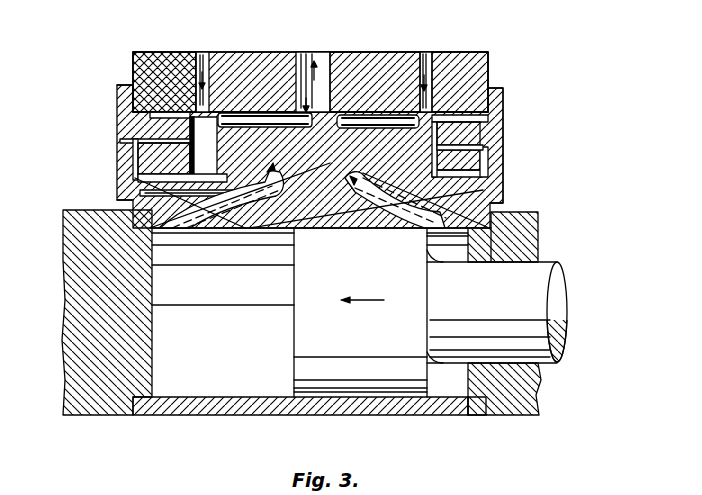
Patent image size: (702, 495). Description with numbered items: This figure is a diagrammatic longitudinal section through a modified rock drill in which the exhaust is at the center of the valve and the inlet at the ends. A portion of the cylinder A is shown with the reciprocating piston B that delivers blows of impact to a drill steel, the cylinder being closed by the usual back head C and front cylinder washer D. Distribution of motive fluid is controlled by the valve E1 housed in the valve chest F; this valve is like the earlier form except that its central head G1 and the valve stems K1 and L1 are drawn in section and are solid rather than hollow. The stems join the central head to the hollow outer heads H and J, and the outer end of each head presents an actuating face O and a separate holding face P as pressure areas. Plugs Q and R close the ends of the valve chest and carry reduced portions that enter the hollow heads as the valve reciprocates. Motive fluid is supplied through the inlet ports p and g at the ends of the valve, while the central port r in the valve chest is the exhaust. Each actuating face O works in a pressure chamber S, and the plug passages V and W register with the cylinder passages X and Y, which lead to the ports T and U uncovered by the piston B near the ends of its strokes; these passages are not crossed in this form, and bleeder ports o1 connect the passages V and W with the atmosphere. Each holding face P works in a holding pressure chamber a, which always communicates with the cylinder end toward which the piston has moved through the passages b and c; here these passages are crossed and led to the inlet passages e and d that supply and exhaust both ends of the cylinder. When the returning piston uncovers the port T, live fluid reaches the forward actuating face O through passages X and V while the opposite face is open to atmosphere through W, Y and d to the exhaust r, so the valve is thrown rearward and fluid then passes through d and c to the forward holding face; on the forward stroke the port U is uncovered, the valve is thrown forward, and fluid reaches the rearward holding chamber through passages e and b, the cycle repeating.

The actuating face O is at (173, 110).
The outer head H is at (183, 110).
The inlet port p is at (202, 110).
The valve stem K1 is at (250, 105).
The valve E1 is at (258, 137).
The central port r is at (312, 62).
The central head G1 is at (340, 90).
The valve stem L1 is at (366, 133).
The valve chest F is at (392, 62).
The valve slot g is at (430, 70).
The outer head J is at (462, 62).
The holding face P is at (150, 172).
The plug R is at (490, 130).
The passage V is at (500, 137).
The bleeder port o1 is at (520, 152).
The pressure chamber S is at (150, 134).
The holding pressure chamber a is at (158, 118).
The passage c is at (538, 215).
The plug Q is at (125, 122).
The passage W is at (157, 150).
The passage b is at (140, 200).
The inlet passage d is at (185, 223).
The passage Y is at (233, 230).
The port U is at (240, 210).
The port T is at (362, 218).
The inlet passage e is at (421, 228).
The passage X is at (421, 230).
The back head C is at (88, 403).
The piston B is at (312, 382).
The cylinder A is at (444, 408).
The front cylinder washer D is at (525, 393).